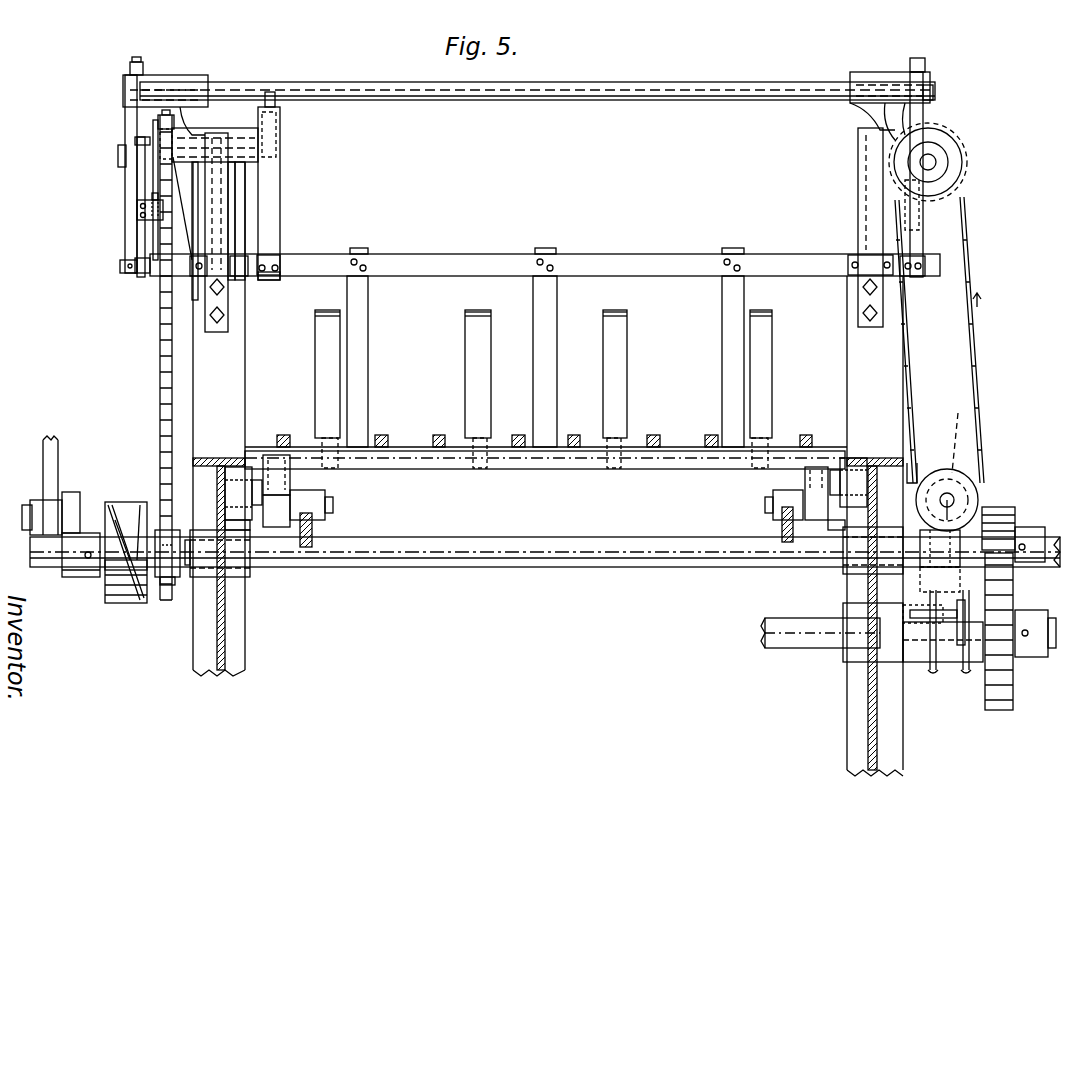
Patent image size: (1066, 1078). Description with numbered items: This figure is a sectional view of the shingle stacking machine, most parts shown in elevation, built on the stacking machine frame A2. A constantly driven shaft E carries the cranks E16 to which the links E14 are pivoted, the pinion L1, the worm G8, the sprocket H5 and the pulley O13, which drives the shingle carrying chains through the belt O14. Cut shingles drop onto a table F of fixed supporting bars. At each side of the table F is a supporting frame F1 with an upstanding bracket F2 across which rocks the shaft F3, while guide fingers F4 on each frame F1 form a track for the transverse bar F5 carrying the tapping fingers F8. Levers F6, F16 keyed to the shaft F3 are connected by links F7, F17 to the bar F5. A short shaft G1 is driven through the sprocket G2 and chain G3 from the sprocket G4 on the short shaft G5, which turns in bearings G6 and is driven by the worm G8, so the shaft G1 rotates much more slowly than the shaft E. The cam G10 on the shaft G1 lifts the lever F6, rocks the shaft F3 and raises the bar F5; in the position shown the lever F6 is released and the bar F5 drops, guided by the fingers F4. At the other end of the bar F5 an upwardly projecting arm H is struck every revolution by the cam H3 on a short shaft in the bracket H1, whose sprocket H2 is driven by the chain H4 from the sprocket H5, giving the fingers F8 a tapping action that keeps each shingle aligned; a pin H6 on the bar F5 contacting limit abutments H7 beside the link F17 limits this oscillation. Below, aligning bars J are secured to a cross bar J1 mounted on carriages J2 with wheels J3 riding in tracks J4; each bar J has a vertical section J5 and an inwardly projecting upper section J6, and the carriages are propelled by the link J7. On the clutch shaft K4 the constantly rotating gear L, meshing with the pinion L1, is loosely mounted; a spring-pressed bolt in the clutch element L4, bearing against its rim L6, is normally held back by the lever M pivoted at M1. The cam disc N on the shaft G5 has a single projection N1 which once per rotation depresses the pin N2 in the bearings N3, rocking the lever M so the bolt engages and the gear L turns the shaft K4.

The stacking machine frame A2 is at (228, 648).
The shaft E is at (450, 567).
The links E14 is at (50, 450).
The cranks E16 is at (72, 500).
The table F is at (438, 434).
The bracket or supporting frame F1 is at (246, 362).
The upstanding bracket F2 is at (205, 80).
The shaft F3 is at (490, 97).
The guide fingers F4 is at (225, 232).
The transverse bar F5 is at (597, 260).
The lever F6 is at (925, 110).
The link F7 is at (920, 237).
The tapping fingers F8 is at (370, 336).
The lever F16 is at (128, 122).
The link F17 is at (143, 185).
The short shaft G1 is at (936, 162).
The sprocket G2 is at (962, 188).
The chain G3 is at (975, 345).
The sprocket G4 is at (947, 432).
The short shaft G5 is at (968, 478).
The bearings G6 is at (912, 475).
The worm G8 is at (1005, 540).
The cam G10 is at (893, 115).
The arm H is at (281, 199).
The bracket H1 is at (243, 185).
The sprocket H2 is at (166, 110).
The cam H3 is at (270, 92).
The chain H4 is at (166, 331).
The sprocket H5 is at (168, 585).
The pin H6 is at (155, 237).
The limit abutments H7 is at (137, 210).
The bars J is at (322, 455).
The cross bar J1 is at (428, 470).
The carriage J2 is at (292, 492).
The wheels J3 is at (238, 468).
The track J4 is at (235, 548).
The vertical section J5 is at (466, 368).
The upper horizontal section J6 is at (326, 311).
The link J7 is at (318, 532).
The clutch shaft K4 is at (782, 650).
The gear L is at (1000, 712).
The pinion L1 is at (1000, 510).
The clutch element L4 is at (963, 650).
The rim L6 is at (932, 665).
The lever M is at (945, 622).
The pivot M1 is at (920, 618).
The cam disc N is at (950, 498).
The cam element or projection N1 is at (965, 535).
The pin N2 is at (960, 600).
The bearings N3 is at (945, 575).
The pulley O13 is at (108, 592).
The belt O14 is at (118, 575).